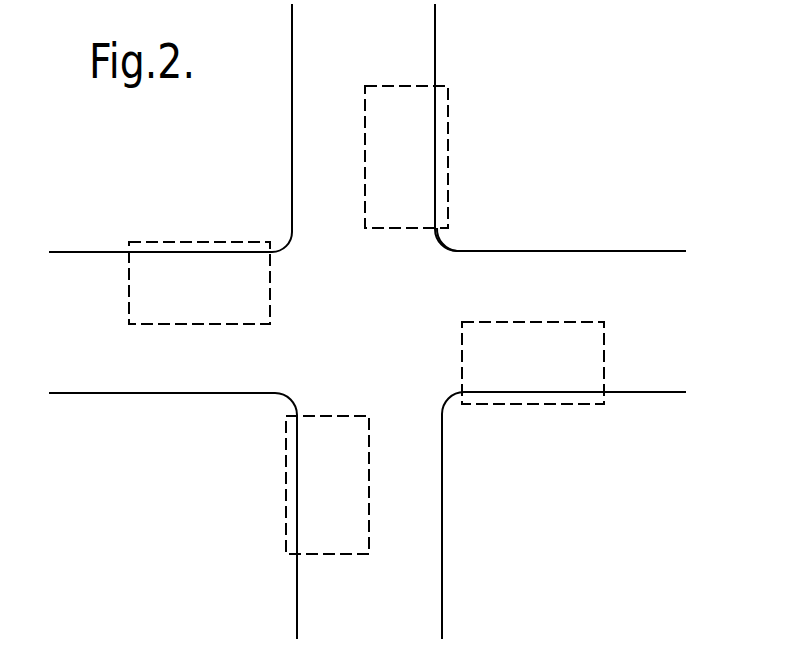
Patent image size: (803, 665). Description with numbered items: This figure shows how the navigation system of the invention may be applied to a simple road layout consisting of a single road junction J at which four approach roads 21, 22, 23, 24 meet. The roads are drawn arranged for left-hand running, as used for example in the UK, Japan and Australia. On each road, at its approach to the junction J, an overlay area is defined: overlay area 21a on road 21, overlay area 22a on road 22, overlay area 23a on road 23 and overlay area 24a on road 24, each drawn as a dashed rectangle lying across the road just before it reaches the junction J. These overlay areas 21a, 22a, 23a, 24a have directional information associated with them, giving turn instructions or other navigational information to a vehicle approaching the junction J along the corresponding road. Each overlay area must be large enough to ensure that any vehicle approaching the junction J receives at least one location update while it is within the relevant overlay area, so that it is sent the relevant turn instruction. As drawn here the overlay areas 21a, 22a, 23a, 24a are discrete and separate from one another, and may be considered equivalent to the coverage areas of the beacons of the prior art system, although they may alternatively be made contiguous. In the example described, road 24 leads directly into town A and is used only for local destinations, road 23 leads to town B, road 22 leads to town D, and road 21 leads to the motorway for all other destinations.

The approach road 21 is at (90, 339).
The approach road 22 is at (385, 605).
The approach road 23 is at (662, 339).
The approach road 24 is at (377, 45).
The overlay area 21a is at (222, 302).
The overlay area 22a is at (357, 487).
The overlay area 23a is at (554, 373).
The overlay area 24a is at (427, 168).
The junction J is at (444, 243).